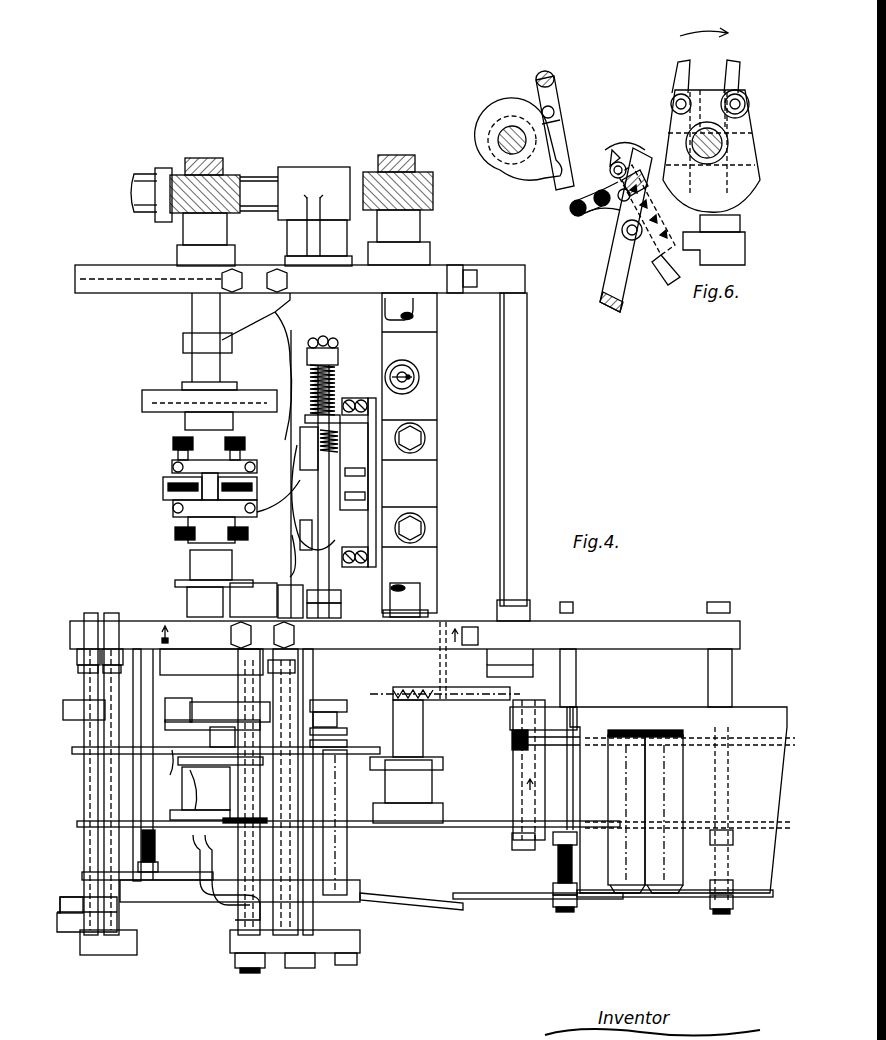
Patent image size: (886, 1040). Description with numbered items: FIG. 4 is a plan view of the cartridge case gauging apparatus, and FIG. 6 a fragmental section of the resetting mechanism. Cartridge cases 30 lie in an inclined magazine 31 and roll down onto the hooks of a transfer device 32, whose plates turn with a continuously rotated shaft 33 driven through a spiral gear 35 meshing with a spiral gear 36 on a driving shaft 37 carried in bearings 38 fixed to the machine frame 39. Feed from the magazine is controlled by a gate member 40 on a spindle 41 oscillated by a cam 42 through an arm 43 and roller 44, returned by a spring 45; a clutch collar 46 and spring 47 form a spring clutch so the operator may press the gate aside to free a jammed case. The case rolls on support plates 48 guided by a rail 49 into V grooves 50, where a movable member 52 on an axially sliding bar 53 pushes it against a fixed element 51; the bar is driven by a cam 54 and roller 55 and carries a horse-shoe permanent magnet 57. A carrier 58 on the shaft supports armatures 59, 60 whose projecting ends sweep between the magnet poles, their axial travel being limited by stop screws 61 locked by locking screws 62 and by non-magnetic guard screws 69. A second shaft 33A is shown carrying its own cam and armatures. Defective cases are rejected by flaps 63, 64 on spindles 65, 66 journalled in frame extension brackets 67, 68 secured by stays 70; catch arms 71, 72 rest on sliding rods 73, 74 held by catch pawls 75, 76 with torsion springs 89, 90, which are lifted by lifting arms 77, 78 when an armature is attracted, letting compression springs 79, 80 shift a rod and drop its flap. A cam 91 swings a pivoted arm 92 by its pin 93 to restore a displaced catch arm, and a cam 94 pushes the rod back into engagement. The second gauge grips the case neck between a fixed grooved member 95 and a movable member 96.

In FIG. 4, the cartridge cases 30 is at (660, 730).
In FIG. 4, the magazine 31 is at (748, 752).
In FIG. 4, the transfer device 32 is at (462, 780).
In FIG. 4, the shaft 33 is at (420, 300).
In FIG. 6, the shaft 33 is at (722, 140).
In FIG. 4, the second shaft 33A is at (200, 590).
In FIG. 6, the second shaft 33A is at (512, 126).
In FIG. 4, the spiral gear 35 is at (433, 198).
In FIG. 4, the spiral gear 36 is at (415, 162).
In FIG. 4, the driving shaft 37 is at (252, 185).
In FIG. 4, the bearings 38 is at (316, 180).
In FIG. 4, the machine frame 39 is at (428, 272).
In FIG. 4, the gate member 40 is at (528, 800).
In FIG. 4, the spindle 41 is at (522, 852).
In FIG. 4, the cam 42 is at (440, 660).
In FIG. 4, the arm 43 is at (505, 668).
In FIG. 4, the roller 44 is at (478, 635).
In FIG. 4, the spring 45 is at (445, 683).
In FIG. 4, the clutch collar 46 is at (512, 845).
In FIG. 4, the spring 47 is at (545, 740).
In FIG. 4, the support plates 48 is at (485, 815).
In FIG. 4, the rail 49 is at (520, 710).
In FIG. 4, the V grooves 50 is at (336, 750).
In FIG. 4, the fixed element 51 is at (410, 903).
In FIG. 4, the movable member 52 is at (338, 730).
In FIG. 4, the axially sliding bar 53 is at (420, 596).
In FIG. 4, the cam 54 is at (250, 396).
In FIG. 4, the roller 55 is at (420, 372).
In FIG. 4, the permanent magnet 57 is at (290, 585).
In FIG. 6, the permanent magnet 57 is at (612, 293).
In FIG. 4, the carrier 58 is at (250, 478).
In FIG. 6, the carrier 58 is at (720, 180).
In FIG. 4, the armature 59 is at (252, 489).
In FIG. 6, the armature 59 is at (733, 68).
In FIG. 4, the armature 60 is at (168, 488).
In FIG. 6, the armature 60 is at (683, 68).
In FIG. 4, the stop screws 61 is at (178, 446).
In FIG. 6, the stop screws 61 is at (745, 102).
In FIG. 4, the locking screws 62 is at (172, 466).
In FIG. 6, the locking screws 62 is at (740, 95).
In FIG. 4, the flap 63 is at (260, 775).
In FIG. 4, the flap 64 is at (214, 742).
In FIG. 4, the spindle 65 is at (315, 955).
In FIG. 6, the spindle 65 is at (618, 192).
In FIG. 4, the spindle 66 is at (280, 960).
In FIG. 6, the spindle 66 is at (572, 214).
In FIG. 4, the frame extension bracket 67 is at (355, 943).
In FIG. 4, the frame extension bracket 68 is at (118, 955).
In FIG. 4, the guard screws 69 is at (240, 442).
In FIG. 6, the guard screws 69 is at (671, 104).
In FIG. 4, the stays 70 is at (305, 918).
In FIG. 4, the catch arm 71 is at (341, 610).
In FIG. 6, the catch arm 71 is at (612, 152).
In FIG. 4, the catch arm 72 is at (341, 594).
In FIG. 6, the catch arm 72 is at (598, 208).
In FIG. 4, the sliding rod 73 is at (335, 378).
In FIG. 6, the sliding rod 73 is at (642, 174).
In FIG. 4, the sliding rod 74 is at (318, 341).
In FIG. 6, the sliding rod 74 is at (625, 154).
In FIG. 4, the catch pawl 75 is at (373, 557).
In FIG. 6, the catch pawl 75 is at (625, 238).
In FIG. 4, the catch pawl 76 is at (300, 455).
In FIG. 6, the catch pawl 76 is at (600, 225).
In FIG. 4, the lifting arm 77 is at (365, 496).
In FIG. 6, the lifting arm 77 is at (668, 282).
In FIG. 4, the lifting arm 78 is at (365, 472).
In FIG. 4, the compression spring 79 is at (340, 395).
In FIG. 4, the compression spring 80 is at (312, 385).
In FIG. 4, the torsion spring 89 is at (278, 499).
In FIG. 4, the torsion spring 90 is at (345, 440).
In FIG. 4, the cam 91 is at (175, 584).
In FIG. 6, the cam 91 is at (503, 172).
In FIG. 4, the pivoted arm 92 is at (290, 575).
In FIG. 6, the pivoted arm 92 is at (560, 186).
In FIG. 4, the pin 93 is at (245, 568).
In FIG. 6, the pin 93 is at (542, 110).
In FIG. 4, the cam 94 is at (183, 344).
In FIG. 4, the fixed grooved member 95 is at (85, 876).
In FIG. 4, the movable member 96 is at (150, 878).